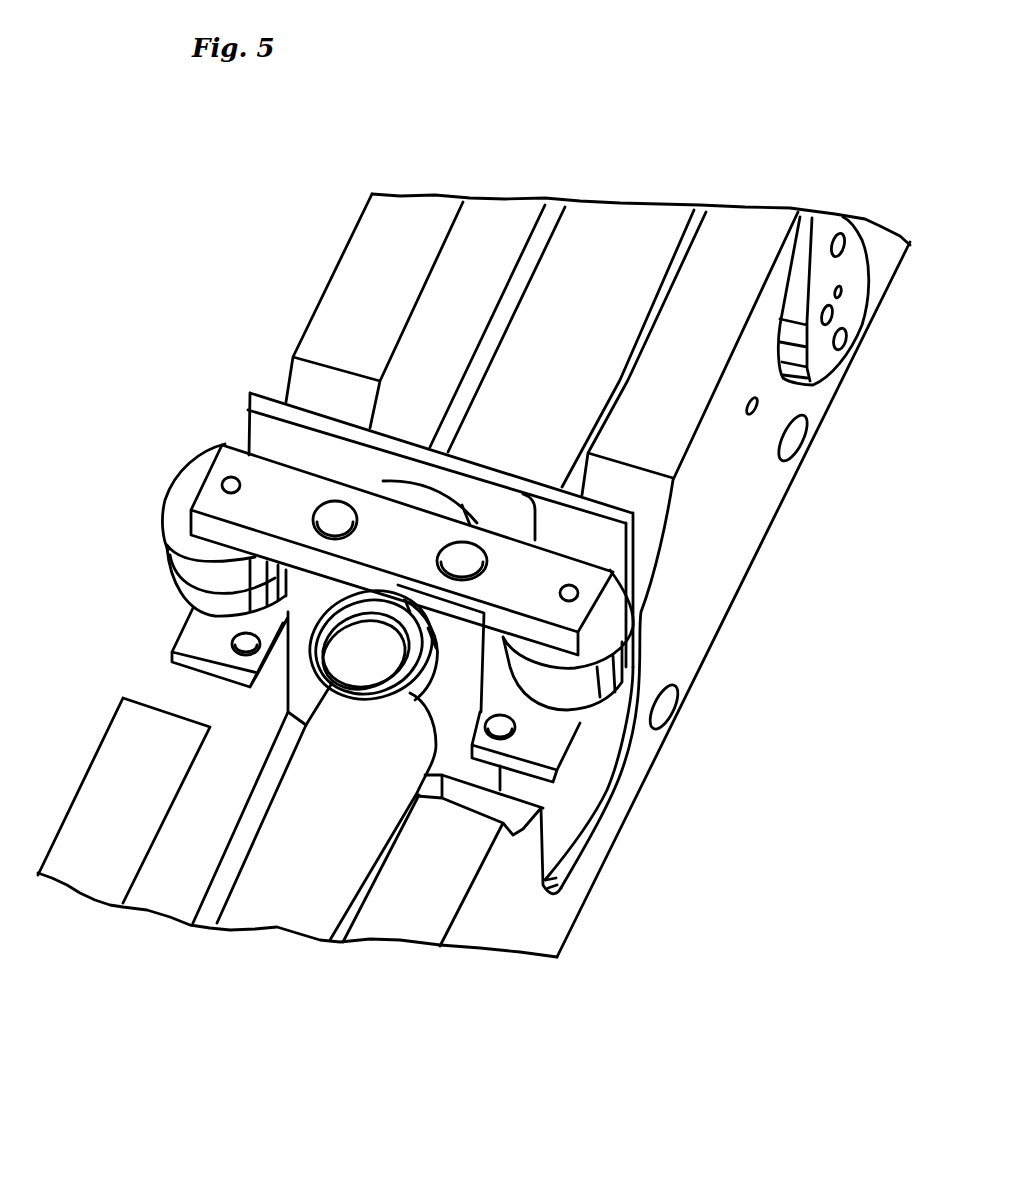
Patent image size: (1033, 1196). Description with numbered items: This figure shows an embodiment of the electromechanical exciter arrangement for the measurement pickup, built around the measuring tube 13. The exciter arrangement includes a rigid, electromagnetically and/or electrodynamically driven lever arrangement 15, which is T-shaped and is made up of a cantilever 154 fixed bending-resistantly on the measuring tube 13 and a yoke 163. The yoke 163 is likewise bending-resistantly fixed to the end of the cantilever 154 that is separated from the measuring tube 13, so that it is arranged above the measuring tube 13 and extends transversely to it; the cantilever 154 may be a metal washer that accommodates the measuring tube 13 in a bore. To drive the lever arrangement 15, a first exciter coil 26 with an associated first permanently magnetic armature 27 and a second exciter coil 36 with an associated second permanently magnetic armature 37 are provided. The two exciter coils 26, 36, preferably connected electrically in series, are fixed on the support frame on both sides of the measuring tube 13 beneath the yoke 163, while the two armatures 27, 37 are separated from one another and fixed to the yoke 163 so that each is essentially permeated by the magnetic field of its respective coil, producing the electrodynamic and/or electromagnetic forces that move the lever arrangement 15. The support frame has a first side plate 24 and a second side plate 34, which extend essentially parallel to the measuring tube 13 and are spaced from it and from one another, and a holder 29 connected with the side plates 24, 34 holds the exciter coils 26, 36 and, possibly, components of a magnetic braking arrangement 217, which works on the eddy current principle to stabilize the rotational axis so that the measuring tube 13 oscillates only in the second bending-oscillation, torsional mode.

The measuring tube 13 is at (373, 907).
The lever arrangement 15 is at (170, 460).
The first side plate 24 is at (332, 313).
The first exciter coil 26 is at (165, 583).
The first permanently magnetic armature 27 is at (155, 491).
The holder 29 is at (618, 538).
The second side plate 34 is at (697, 353).
The second exciter coil 36 is at (598, 724).
The second permanently magnetic armature 37 is at (656, 675).
The cantilever 154 is at (303, 602).
The yoke 163 is at (243, 465).
The magnetic braking arrangement 217 is at (362, 662).